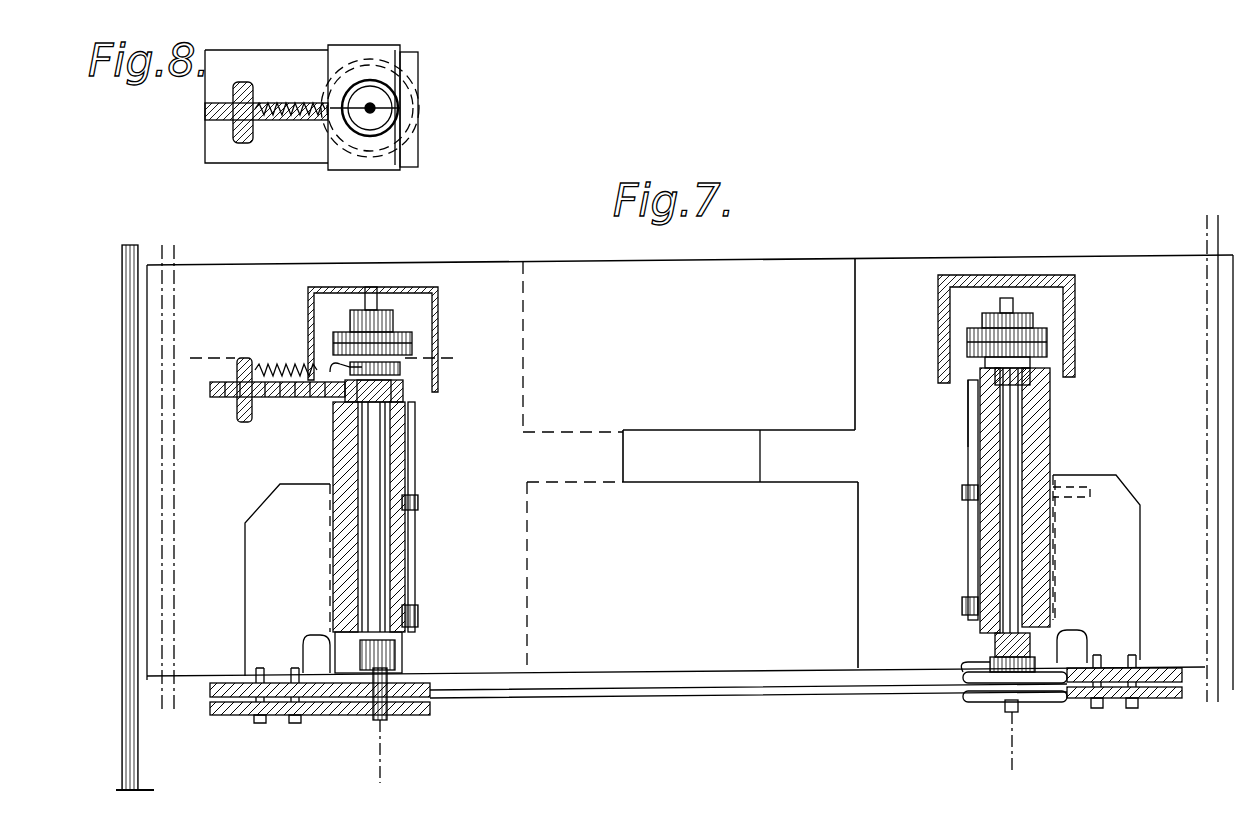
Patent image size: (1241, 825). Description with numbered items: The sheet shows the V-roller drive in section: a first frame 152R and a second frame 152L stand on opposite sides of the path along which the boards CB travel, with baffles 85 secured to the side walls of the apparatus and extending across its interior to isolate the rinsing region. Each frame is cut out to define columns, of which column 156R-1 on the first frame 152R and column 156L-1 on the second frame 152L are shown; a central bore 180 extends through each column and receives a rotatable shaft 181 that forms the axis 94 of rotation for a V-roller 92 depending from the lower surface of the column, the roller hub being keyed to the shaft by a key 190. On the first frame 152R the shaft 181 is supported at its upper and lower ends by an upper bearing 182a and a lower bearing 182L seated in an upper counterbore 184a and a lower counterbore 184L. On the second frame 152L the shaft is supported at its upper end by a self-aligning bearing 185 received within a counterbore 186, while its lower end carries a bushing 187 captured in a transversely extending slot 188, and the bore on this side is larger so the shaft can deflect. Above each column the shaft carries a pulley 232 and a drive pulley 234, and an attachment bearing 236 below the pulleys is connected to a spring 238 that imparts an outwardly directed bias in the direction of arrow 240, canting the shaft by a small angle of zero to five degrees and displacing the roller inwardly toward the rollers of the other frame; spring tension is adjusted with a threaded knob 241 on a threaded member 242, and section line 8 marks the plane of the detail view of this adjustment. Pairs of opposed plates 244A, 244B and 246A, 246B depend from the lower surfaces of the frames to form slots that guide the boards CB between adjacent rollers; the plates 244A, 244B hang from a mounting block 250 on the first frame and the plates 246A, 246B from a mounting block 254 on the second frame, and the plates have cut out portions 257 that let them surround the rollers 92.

In FIG. 7, the baffle 85 is at (810, 282).
In FIG. 7, the board CB is at (773, 692).
In FIG. 7, the second frame 152L is at (347, 505).
In FIG. 7, the first frame 152R is at (1027, 275).
In FIG. 8, the column 156L-1 is at (386, 88).
In FIG. 7, the column 156L-1 is at (402, 530).
In FIG. 7, the column 156R-1 is at (1040, 448).
In FIG. 7, the central bore 180 is at (375, 468).
In FIG. 8, the rotatable shaft 181 is at (372, 106).
In FIG. 7, the rotatable shaft 181 is at (380, 448).
In FIG. 7, the upper bearing 182a is at (1025, 368).
In FIG. 7, the lower bearing 182L is at (1000, 640).
In FIG. 7, the upper counterbore 184a is at (985, 393).
In FIG. 7, the lower counterbore 184L is at (1067, 628).
In FIG. 7, the self-aligning bearing 185 is at (392, 400).
In FIG. 7, the counterbore 186 is at (405, 412).
In FIG. 7, the bushing 187 is at (400, 640).
In FIG. 7, the transversely extending slot 188 is at (405, 650).
In FIG. 7, the key 190 is at (985, 662).
In FIG. 7, the pulley 232 is at (345, 345).
In FIG. 7, the drive pulley 234 is at (335, 360).
In FIG. 8, the attachment bearing 236 is at (405, 122).
In FIG. 7, the attachment bearing 236 is at (405, 368).
In FIG. 8, the spring 238 is at (283, 124).
In FIG. 7, the spring 238 is at (290, 366).
In FIG. 7, the arrow 240 is at (313, 423).
In FIG. 8, the threaded knob 241 is at (243, 143).
In FIG. 7, the threaded knob 241 is at (250, 420).
In FIG. 8, the threaded member 242 is at (215, 125).
In FIG. 7, the threaded member 242 is at (220, 398).
In FIG. 7, the plate 244A is at (1165, 667).
In FIG. 7, the plate 244B is at (1165, 700).
In FIG. 7, the plate 246A is at (228, 684).
In FIG. 7, the plate 246B is at (230, 716).
In FIG. 7, the mounting block 250 is at (1110, 510).
In FIG. 7, the mounting block 254 is at (268, 586).
In FIG. 8, the cut out portion 257 is at (410, 148).
In FIG. 7, the cut out portion 257 is at (350, 715).
In FIG. 8, the V-roller 92 is at (421, 105).
In FIG. 7, the V-roller 92 is at (988, 712).
In FIG. 7, the axis of rotation 94 is at (382, 758).
In FIG. 7, the section line 8— 8 is at (183, 430).